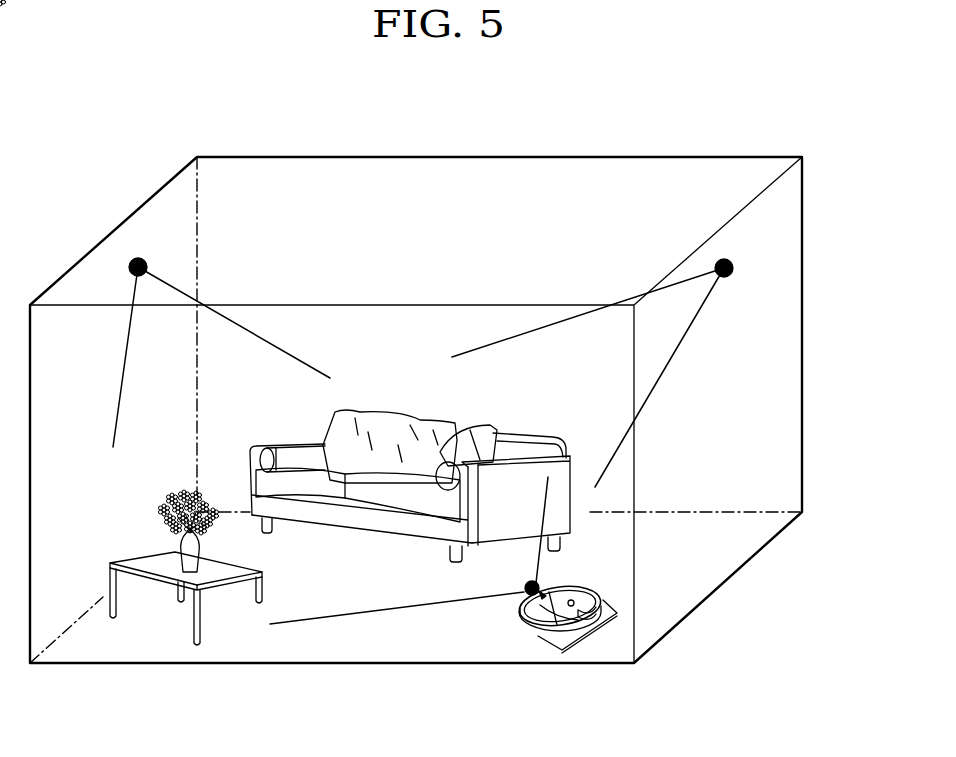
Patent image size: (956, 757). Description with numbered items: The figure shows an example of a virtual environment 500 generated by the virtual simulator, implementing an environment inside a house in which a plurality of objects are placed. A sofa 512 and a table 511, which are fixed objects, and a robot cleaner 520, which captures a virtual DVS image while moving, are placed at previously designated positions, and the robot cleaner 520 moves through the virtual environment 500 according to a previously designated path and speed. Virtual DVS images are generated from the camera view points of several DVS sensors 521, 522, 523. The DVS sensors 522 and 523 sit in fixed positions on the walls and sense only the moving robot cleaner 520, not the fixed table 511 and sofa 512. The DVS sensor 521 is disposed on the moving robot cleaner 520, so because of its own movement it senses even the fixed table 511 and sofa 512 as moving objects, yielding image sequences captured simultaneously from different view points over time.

The virtual environment 500 is at (502, 156).
The table 511 is at (198, 645).
The sofa 512 is at (375, 527).
The robot cleaner 520 is at (588, 627).
The DVS sensor 521 is at (524, 594).
The DVS sensor 522 is at (731, 266).
The DVS sensor 523 is at (137, 262).